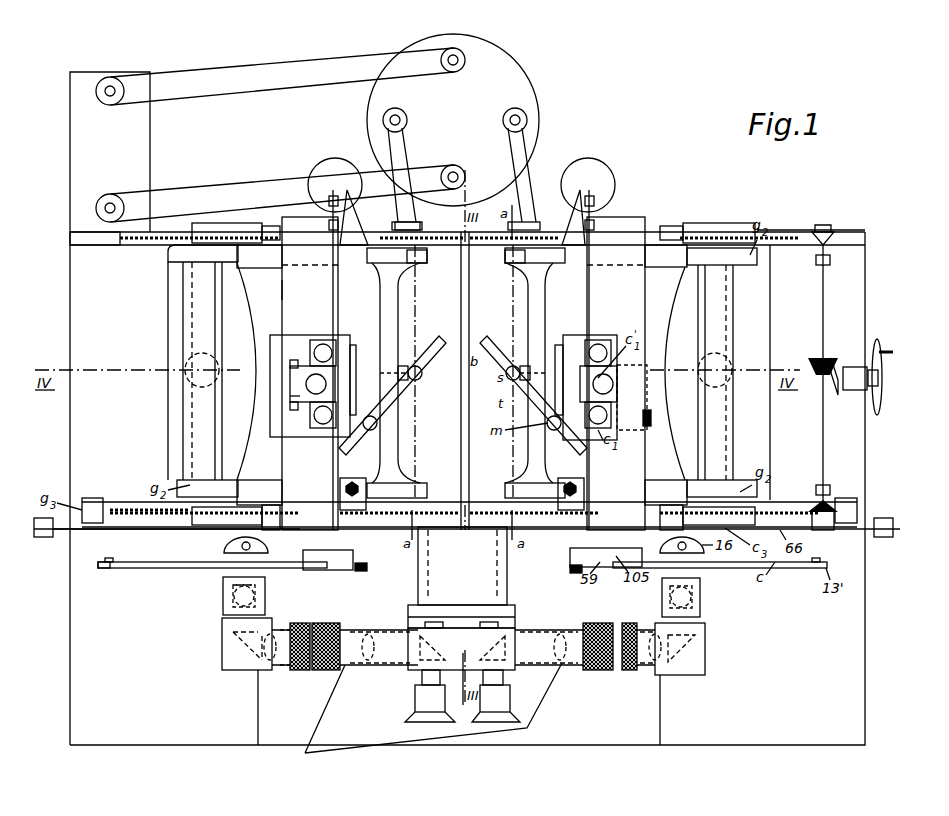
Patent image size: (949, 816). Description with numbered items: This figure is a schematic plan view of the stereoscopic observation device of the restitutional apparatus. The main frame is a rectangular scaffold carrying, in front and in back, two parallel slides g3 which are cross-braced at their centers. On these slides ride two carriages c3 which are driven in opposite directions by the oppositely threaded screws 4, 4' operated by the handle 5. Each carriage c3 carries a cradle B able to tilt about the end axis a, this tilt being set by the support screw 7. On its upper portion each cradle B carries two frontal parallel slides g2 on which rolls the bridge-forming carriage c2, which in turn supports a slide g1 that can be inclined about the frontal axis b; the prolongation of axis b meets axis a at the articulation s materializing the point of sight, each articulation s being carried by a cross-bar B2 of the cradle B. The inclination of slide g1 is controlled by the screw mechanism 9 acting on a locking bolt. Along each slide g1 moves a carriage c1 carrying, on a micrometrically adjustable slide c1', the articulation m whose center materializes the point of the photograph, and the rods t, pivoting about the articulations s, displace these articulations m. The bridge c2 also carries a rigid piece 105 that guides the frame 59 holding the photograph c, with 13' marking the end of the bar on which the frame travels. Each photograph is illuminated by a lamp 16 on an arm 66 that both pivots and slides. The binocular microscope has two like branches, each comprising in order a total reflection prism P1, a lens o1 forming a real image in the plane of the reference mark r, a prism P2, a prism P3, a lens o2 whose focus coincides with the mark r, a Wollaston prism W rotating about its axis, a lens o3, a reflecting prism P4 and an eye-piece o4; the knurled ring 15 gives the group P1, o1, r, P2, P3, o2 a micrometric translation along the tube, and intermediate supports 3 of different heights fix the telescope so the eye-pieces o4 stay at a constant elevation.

The intermediate support 3 is at (462, 578).
The threaded screw 4 is at (236, 224).
The threaded screw 4' is at (707, 224).
The handle 5 is at (878, 352).
The support screw 7 is at (195, 368).
The screw mechanism 9 is at (653, 420).
The bar end 13' is at (105, 579).
The knurled ring 15 is at (626, 670).
The lamp 16 is at (225, 544).
The frame 59 is at (320, 562).
The arm 66 is at (140, 536).
The rigid piece 105 is at (318, 556).
The end axis a is at (418, 258).
The frontal axis b is at (394, 372).
The cradle B is at (200, 298).
The cross-bar B2 is at (398, 296).
The photograph c is at (160, 563).
The carriage c1 is at (292, 394).
The slide c1' is at (269, 410).
The carriage c2 is at (263, 318).
The carriage c3 is at (160, 505).
The slide g1 is at (273, 287).
The frontal parallel slide g2 is at (190, 255).
The slide g3 is at (73, 236).
The articulation m is at (378, 424).
The articulation s is at (418, 375).
The rod t is at (395, 400).
The lens o1 is at (228, 595).
The lens o2 is at (265, 655).
The lens o3 is at (365, 660).
The eye-piece o4 is at (420, 705).
The total reflection prism P1 is at (235, 605).
The prism P2 is at (160, 642).
The prism P3 is at (245, 650).
The reflecting prism P4 is at (430, 652).
The reference mark r is at (162, 604).
The Wollaston prism W is at (287, 668).